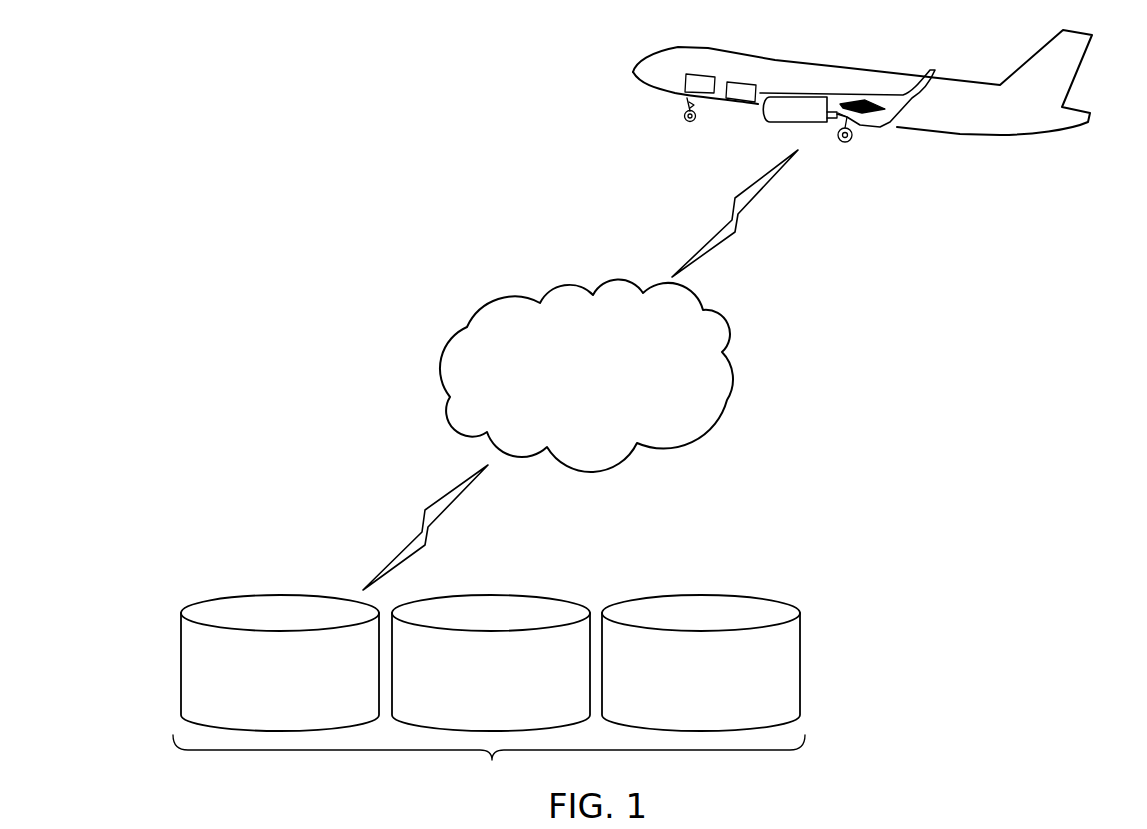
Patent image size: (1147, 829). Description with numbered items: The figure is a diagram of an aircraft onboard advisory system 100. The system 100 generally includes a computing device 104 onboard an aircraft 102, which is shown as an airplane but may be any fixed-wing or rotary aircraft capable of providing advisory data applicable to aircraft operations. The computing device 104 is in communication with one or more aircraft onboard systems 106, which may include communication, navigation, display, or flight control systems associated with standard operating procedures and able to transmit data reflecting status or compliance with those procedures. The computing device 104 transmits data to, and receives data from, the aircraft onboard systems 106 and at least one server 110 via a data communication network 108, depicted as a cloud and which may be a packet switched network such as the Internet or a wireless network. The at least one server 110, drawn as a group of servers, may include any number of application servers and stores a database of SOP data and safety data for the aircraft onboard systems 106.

The aircraft onboard advisory system 100 is at (141, 125).
The aircraft 102 is at (1078, 73).
The computing device 104 is at (698, 90).
The aircraft onboard systems 106 is at (740, 97).
The data communication network 108 is at (727, 332).
The at least one server 110 is at (489, 693).